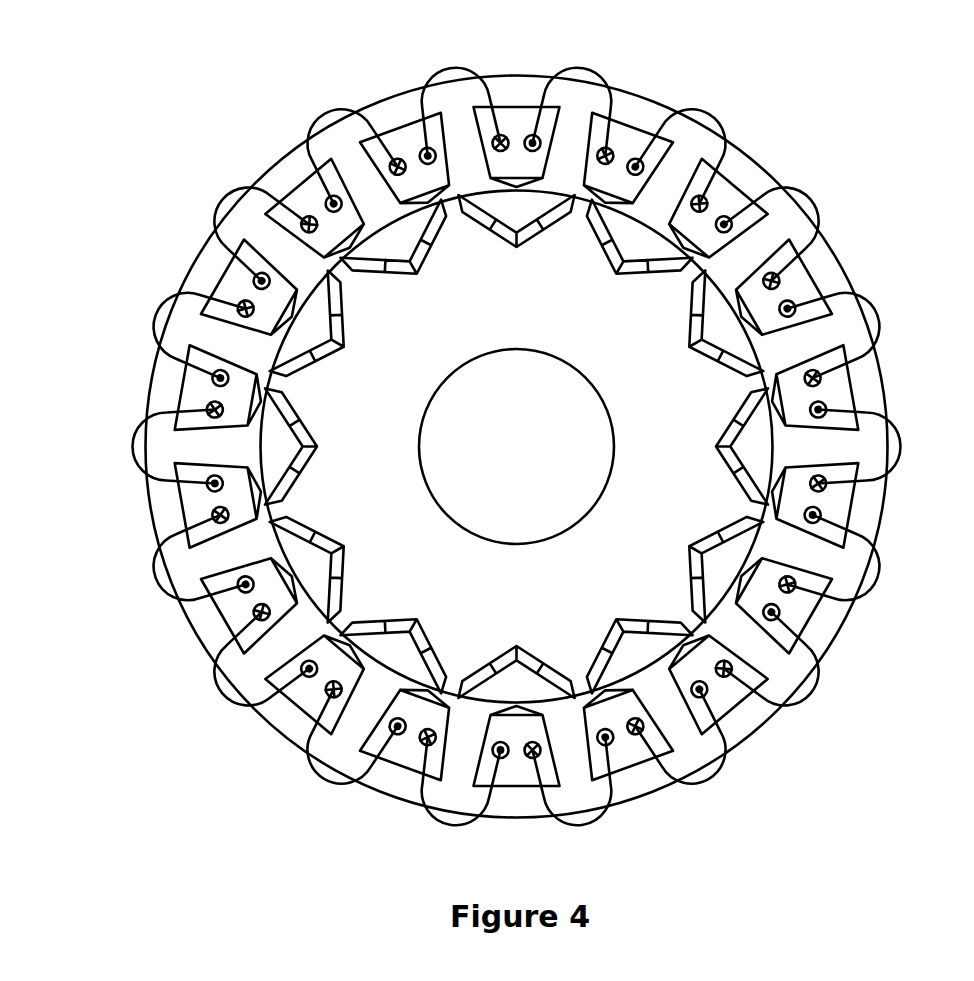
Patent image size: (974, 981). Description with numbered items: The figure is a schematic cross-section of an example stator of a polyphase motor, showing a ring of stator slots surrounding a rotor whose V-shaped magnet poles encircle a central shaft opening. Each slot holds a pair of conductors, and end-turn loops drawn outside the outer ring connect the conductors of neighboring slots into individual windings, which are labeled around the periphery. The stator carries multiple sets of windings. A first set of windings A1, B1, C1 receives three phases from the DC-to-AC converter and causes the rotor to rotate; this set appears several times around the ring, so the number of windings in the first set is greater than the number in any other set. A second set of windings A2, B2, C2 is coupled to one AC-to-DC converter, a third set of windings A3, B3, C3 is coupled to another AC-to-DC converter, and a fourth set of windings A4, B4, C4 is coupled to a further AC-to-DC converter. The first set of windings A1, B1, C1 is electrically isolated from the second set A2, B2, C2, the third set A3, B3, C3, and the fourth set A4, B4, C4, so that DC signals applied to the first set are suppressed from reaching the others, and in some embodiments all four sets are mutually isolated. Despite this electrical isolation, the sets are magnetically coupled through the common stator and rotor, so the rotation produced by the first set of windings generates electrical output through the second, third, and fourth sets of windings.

The first set winding, phase A A1 is at (450, 65).
The first set winding, phase B B1 is at (583, 67).
The first set winding, phase C C1 is at (713, 112).
The second set winding, phase A A2 is at (798, 202).
The second set winding, phase B B2 is at (878, 313).
The second set winding, phase C C2 is at (900, 448).
The third set winding, phase A A3 is at (588, 830).
The third set winding, phase B B3 is at (452, 830).
The third set winding, phase C C3 is at (320, 782).
The fourth set winding, phase A A4 is at (156, 314).
The fourth set winding, phase B B4 is at (217, 202).
The fourth set winding, phase C C4 is at (322, 112).